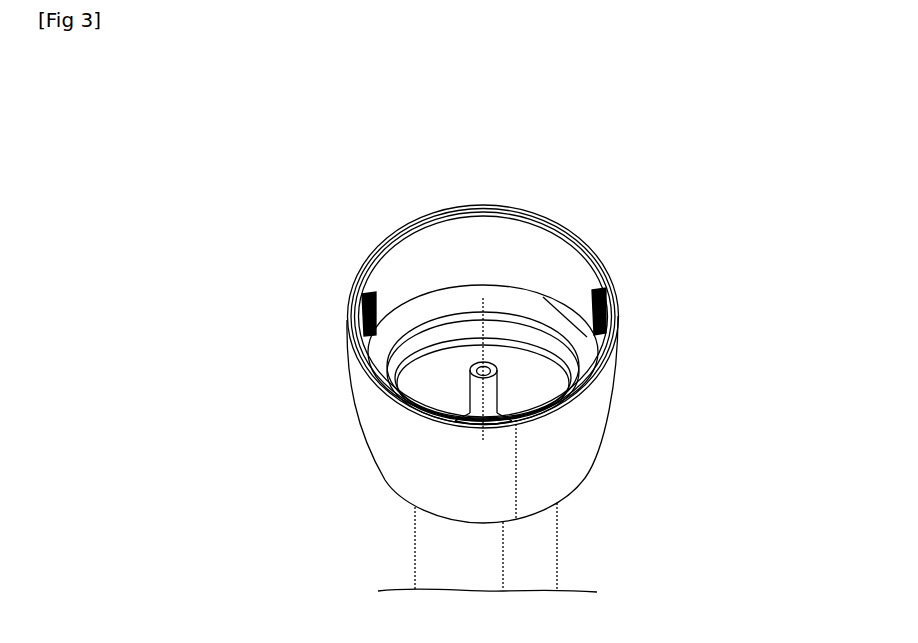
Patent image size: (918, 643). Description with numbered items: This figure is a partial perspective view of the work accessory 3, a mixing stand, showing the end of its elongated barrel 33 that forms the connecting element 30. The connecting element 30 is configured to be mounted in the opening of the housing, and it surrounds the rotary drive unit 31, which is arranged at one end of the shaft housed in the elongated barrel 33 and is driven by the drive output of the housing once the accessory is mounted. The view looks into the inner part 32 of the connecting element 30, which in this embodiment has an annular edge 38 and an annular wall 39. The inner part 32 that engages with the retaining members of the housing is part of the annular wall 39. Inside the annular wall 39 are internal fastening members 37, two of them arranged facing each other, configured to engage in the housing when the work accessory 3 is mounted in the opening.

The work accessory 3 is at (303, 492).
The connecting element 30 is at (578, 413).
The rotary drive unit 31 is at (497, 383).
The inner part 32 is at (562, 276).
The elongated barrel 33 is at (522, 570).
The internal fastening members 37 is at (365, 328).
The annular edge 38 is at (513, 207).
The annular wall 39 is at (357, 412).